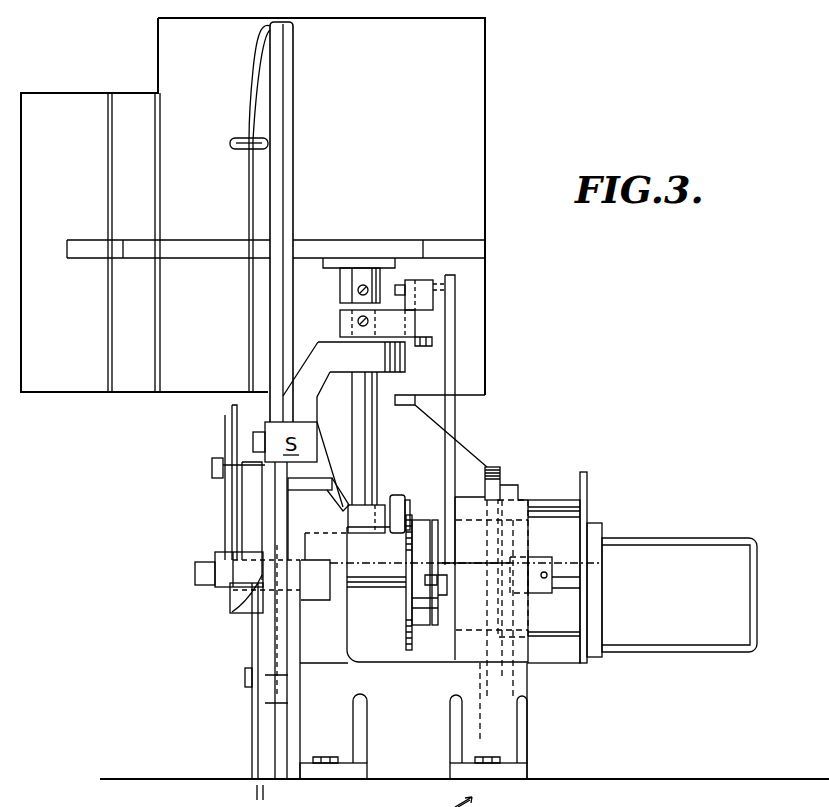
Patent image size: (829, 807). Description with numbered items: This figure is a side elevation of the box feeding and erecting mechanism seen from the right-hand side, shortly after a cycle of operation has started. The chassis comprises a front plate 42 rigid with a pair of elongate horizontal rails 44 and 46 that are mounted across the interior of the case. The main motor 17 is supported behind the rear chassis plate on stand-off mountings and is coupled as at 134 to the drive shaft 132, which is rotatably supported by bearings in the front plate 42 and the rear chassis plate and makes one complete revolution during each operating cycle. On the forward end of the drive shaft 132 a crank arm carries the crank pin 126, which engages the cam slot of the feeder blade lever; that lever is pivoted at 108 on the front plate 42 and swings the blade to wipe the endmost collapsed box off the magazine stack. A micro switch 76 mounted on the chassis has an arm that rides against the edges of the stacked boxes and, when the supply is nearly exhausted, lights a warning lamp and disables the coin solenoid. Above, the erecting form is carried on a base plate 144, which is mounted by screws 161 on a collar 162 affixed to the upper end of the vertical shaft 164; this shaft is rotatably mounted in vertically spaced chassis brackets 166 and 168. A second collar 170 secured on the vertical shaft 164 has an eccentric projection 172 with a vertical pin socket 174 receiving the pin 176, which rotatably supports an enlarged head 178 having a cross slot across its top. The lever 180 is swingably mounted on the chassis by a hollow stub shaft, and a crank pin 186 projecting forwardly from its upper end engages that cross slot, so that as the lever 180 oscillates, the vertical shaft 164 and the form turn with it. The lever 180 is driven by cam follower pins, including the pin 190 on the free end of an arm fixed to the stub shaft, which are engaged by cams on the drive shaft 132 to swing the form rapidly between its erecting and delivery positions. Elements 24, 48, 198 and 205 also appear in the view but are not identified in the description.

The main motor 17 is at (674, 606).
The vertical bar 24 is at (304, 118).
The front plate 42 is at (302, 713).
The horizontal rail 44 is at (363, 776).
The horizontal rail 46 is at (452, 770).
The bolts 48 is at (330, 757).
The micro switch 76 is at (308, 491).
The pivot 108 is at (216, 592).
The crank pin 126 is at (250, 412).
The drive shaft 132 is at (381, 590).
The coupling 134 is at (546, 568).
The base plate 144 is at (411, 242).
The screws 161 is at (338, 270).
The collar 162 is at (348, 285).
The vertical shaft 164 is at (371, 443).
The chassis bracket 166 is at (344, 424).
The chassis bracket 168 is at (380, 502).
The collar 170 is at (342, 322).
The eccentric projection 172 is at (384, 324).
The vertical pin socket 174 is at (438, 334).
The pin 176 is at (424, 341).
The enlarged head 178 is at (417, 295).
The lever 180 is at (453, 418).
The crank pin 186 is at (450, 279).
The cam follower pin 190 is at (412, 515).
The bar inner line 198 is at (276, 181).
The flexible strip 205 is at (245, 85).